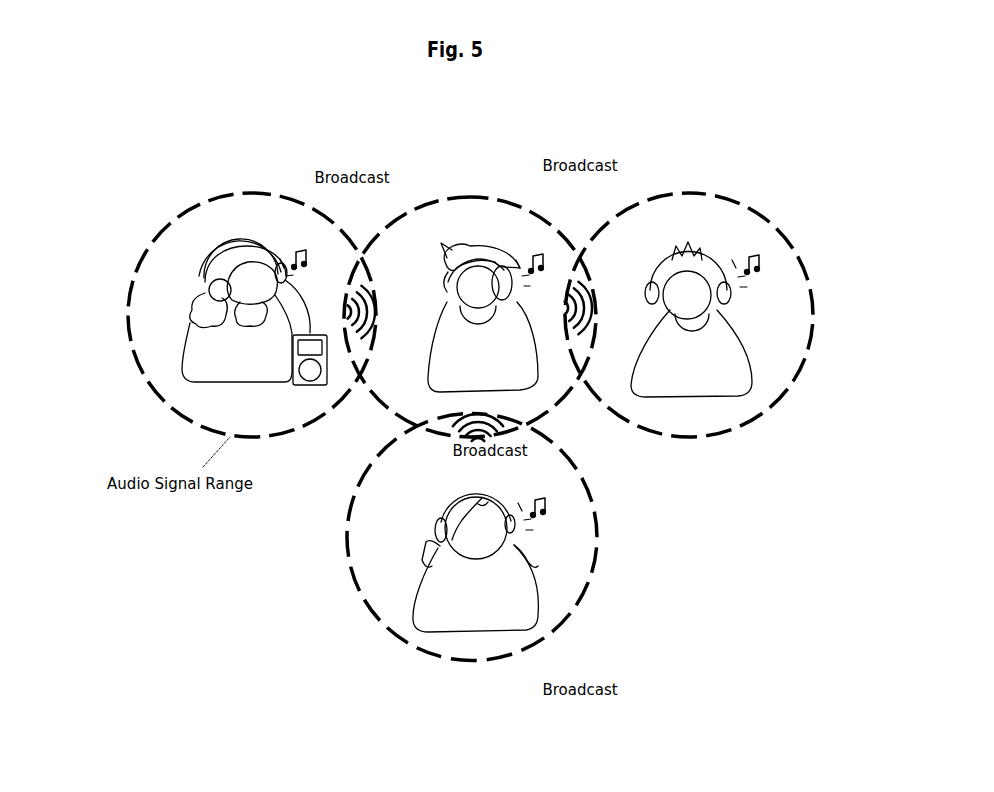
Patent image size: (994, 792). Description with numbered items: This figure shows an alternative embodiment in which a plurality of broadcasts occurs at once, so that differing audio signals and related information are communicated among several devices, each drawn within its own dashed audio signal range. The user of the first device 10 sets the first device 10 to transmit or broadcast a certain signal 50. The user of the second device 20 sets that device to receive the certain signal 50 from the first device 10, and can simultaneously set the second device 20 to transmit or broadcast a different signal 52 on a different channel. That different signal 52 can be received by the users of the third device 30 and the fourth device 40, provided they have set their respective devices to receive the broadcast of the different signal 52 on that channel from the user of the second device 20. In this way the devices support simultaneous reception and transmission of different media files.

The first device 10 is at (220, 291).
The second device 20 is at (509, 287).
The third device 30 is at (728, 296).
The fourth device 40 is at (518, 528).
The certain signal 50 is at (372, 290).
The different signal 52 is at (588, 291).